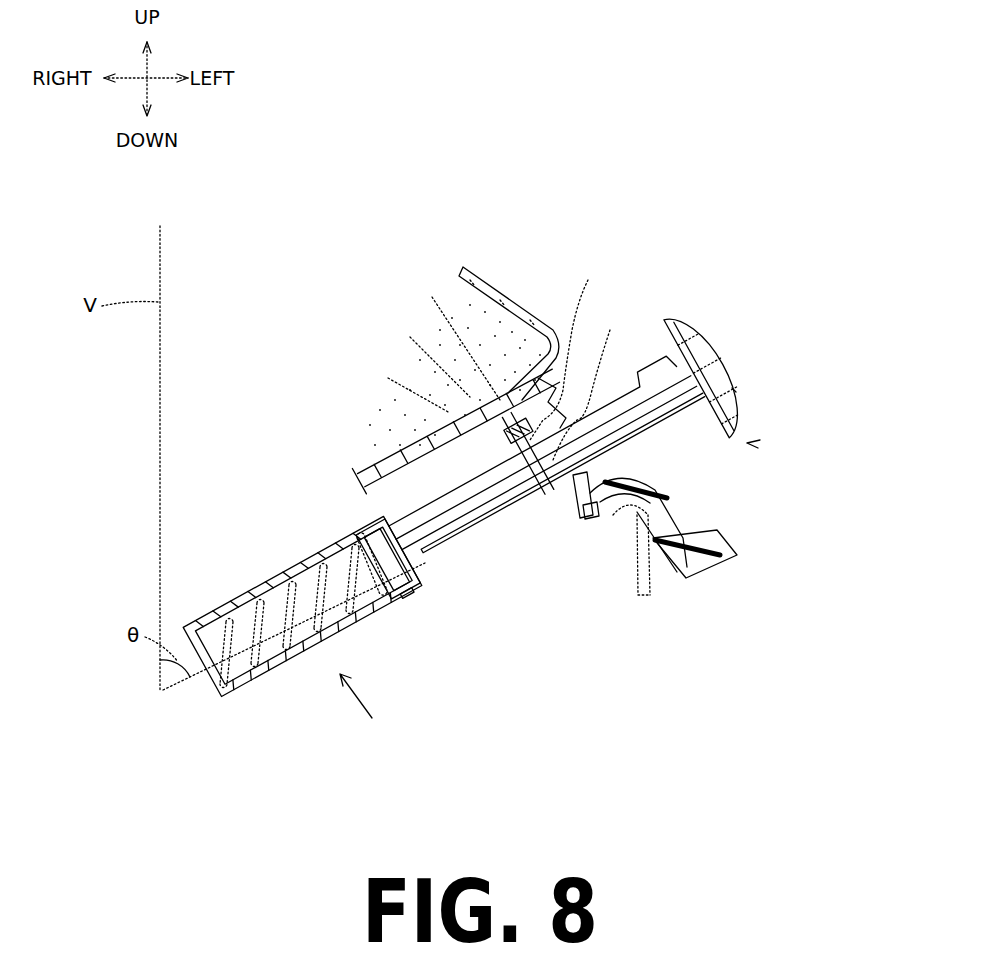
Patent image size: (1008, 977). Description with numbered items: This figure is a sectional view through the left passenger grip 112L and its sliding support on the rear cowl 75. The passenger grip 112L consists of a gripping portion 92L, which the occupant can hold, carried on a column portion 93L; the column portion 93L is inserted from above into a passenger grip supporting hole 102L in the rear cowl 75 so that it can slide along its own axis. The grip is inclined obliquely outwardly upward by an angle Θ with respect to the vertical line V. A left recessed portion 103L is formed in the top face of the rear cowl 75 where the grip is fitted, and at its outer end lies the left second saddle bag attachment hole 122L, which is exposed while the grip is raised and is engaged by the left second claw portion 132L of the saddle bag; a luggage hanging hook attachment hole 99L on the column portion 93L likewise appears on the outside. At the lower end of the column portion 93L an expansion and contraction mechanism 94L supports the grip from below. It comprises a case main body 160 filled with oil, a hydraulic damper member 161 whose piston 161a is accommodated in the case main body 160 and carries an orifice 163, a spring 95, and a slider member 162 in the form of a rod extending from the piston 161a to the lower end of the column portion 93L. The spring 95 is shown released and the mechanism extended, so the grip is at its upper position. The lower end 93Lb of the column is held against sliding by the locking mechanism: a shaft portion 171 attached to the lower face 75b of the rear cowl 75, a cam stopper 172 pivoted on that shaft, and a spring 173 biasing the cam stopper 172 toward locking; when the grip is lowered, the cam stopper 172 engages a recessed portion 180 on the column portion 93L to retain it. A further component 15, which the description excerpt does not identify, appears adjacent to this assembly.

The seat back frame member 15 is at (499, 262).
The shaft portion 171 is at (399, 403).
The cam stopper 172 is at (430, 366).
The spring 173 is at (466, 335).
The left recessed portion 103L is at (576, 348).
The passenger grip supporting hole 102L is at (600, 382).
The recessed portion 180 is at (703, 356).
The gripping portion 92L is at (733, 388).
The passenger grip 112L is at (760, 441).
The luggage hanging hook attachment hole 99L is at (655, 440).
The column portion 93L is at (650, 468).
The lower face 75b is at (513, 453).
The lower end 93Lb is at (560, 490).
The slider member 162 is at (503, 510).
The orifice 163 is at (363, 522).
The left second claw portion 132L is at (587, 517).
The left second saddle bag attachment hole 122L is at (603, 518).
The rear cowl 75 is at (660, 583).
The piston 161a is at (370, 598).
The hydraulic damper member 161 is at (406, 623).
The spring 95 is at (291, 662).
The case main body 160 is at (248, 696).
The expansion and contraction mechanism 94L is at (384, 717).